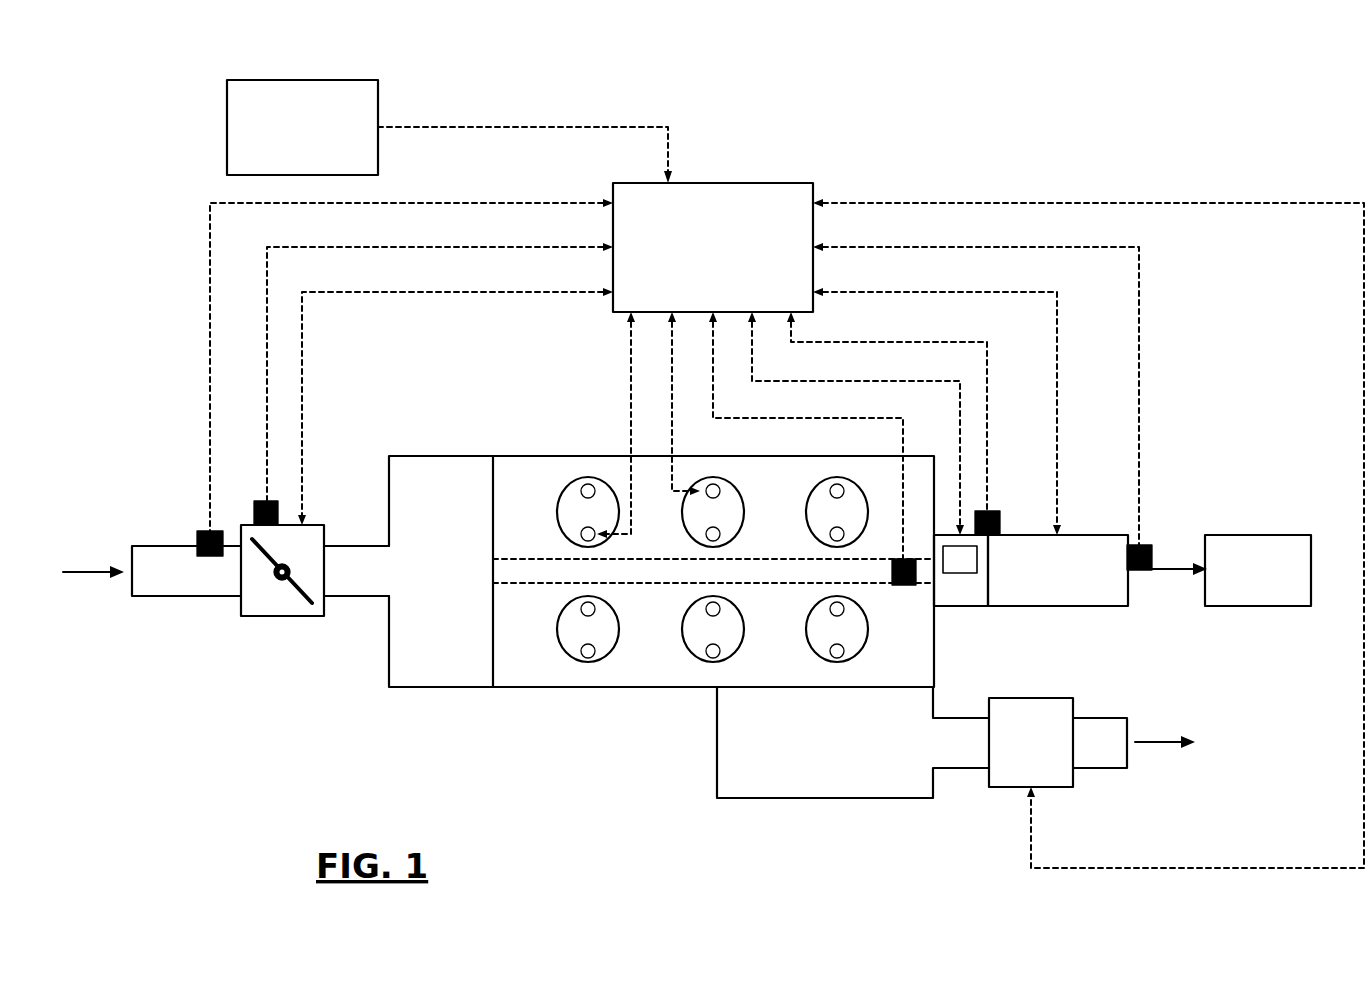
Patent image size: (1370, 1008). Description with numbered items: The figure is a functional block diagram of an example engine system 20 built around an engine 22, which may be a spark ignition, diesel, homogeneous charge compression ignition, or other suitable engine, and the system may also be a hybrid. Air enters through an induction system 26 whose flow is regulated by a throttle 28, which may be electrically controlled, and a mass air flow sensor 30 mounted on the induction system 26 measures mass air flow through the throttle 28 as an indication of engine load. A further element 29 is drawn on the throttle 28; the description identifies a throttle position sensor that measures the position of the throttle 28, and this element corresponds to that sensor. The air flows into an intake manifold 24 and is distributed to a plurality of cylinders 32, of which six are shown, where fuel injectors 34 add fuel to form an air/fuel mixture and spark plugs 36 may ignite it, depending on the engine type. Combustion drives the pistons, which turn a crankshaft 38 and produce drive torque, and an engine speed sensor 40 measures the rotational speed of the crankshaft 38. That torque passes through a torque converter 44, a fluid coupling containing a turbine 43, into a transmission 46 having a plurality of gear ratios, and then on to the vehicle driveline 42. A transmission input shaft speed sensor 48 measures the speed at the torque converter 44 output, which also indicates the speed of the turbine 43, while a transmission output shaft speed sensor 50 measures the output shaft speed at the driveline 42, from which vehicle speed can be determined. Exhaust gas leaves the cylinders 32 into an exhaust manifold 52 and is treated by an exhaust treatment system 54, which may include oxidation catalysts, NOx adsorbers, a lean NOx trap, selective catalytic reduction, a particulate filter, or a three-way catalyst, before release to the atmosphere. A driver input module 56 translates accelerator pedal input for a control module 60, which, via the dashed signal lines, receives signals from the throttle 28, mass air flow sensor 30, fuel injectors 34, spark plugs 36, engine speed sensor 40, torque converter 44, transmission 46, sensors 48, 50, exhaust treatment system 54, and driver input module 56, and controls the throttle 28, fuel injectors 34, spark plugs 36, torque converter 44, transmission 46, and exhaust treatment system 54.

The engine system 20 is at (1148, 97).
The engine 22 is at (539, 688).
The intake manifold 24 is at (440, 688).
The induction system 26 is at (160, 546).
The throttle 28 is at (284, 616).
The throttle actuator 29 is at (258, 501).
The mass air flow (MAF) sensor 30 is at (207, 556).
The cylinders 32 is at (606, 661).
The fuel injectors 34 is at (582, 612).
The spark plugs 36 is at (830, 654).
The crankshaft 38 is at (713, 572).
The engine speed sensor 40 is at (904, 585).
The driveline 42 is at (1260, 535).
The turbine 43 is at (960, 559).
The torque converter 44 is at (961, 606).
The transmission 46 is at (1059, 606).
The transmission input shaft speed (TISS) sensor 48 is at (990, 511).
The transmission output shaft speed (TOSS) sensor 50 is at (1140, 570).
The exhaust manifold 52 is at (827, 798).
The exhaust treatment system 54 is at (1003, 787).
The driver input module 56 is at (305, 80).
The control module 60 is at (753, 183).